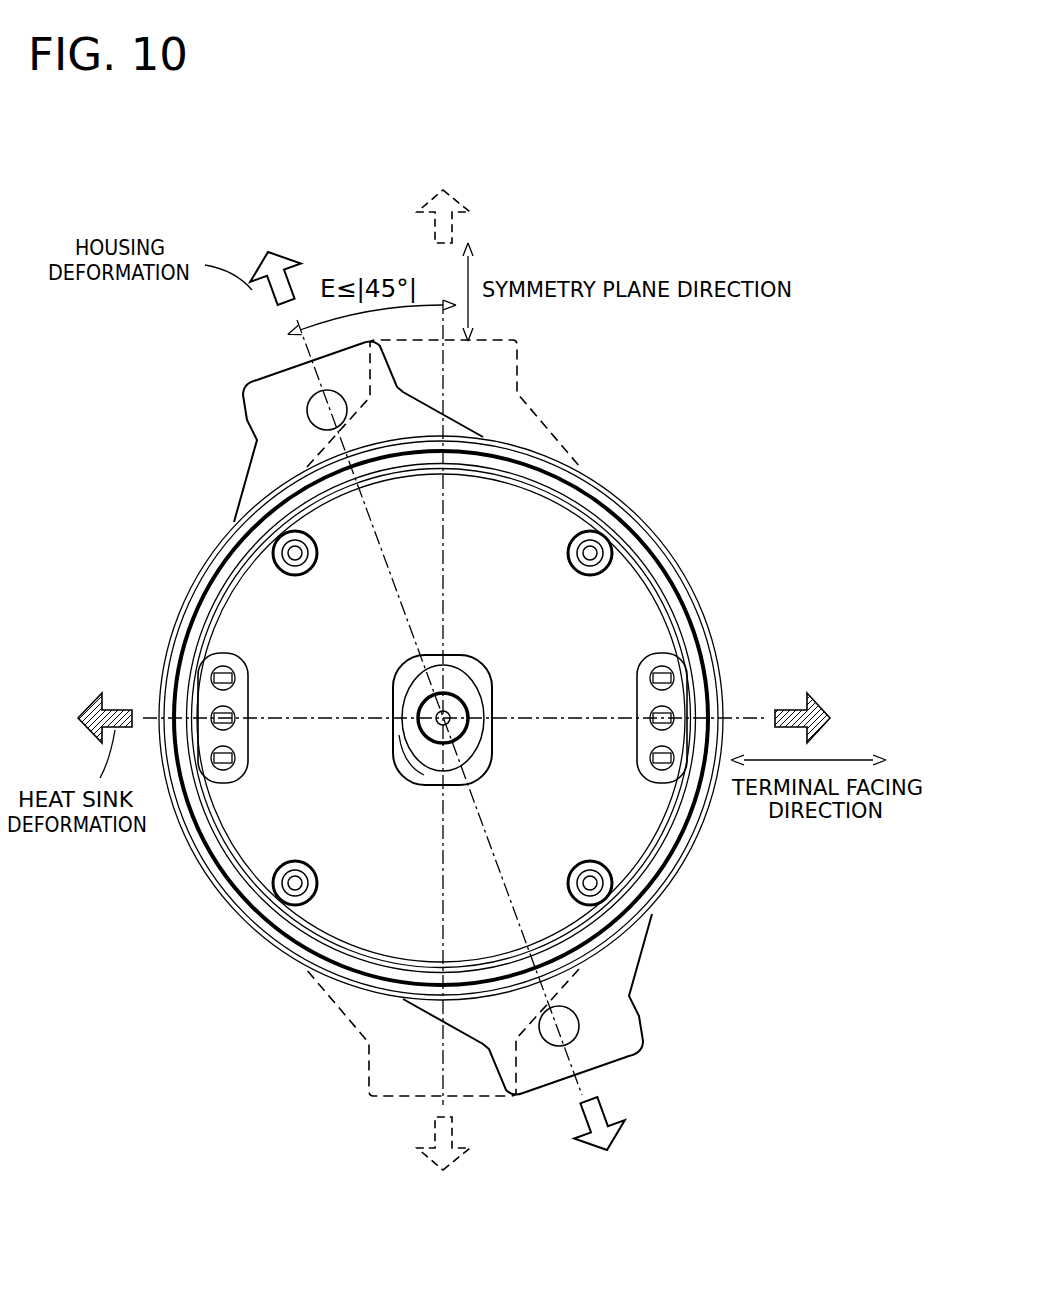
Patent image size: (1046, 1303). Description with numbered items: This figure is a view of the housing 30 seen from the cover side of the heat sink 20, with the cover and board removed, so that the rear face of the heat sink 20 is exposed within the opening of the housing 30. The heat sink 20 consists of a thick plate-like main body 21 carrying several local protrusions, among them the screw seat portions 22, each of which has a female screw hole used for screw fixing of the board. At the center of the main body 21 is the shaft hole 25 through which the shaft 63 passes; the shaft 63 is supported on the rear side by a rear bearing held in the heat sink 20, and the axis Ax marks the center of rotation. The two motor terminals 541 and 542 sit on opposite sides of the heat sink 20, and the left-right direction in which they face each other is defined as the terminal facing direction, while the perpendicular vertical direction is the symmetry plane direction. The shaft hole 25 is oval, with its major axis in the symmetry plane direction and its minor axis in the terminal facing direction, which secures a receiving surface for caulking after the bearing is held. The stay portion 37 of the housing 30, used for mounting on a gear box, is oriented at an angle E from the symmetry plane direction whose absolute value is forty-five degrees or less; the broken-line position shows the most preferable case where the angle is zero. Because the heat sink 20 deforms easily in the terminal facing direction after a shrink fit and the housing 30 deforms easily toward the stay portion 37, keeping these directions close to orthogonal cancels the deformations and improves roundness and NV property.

The heat sink 20 is at (532, 498).
The main body 21 is at (250, 618).
The screw seat portion 22 is at (285, 530).
The shaft hole 25 is at (427, 755).
The housing 30 is at (640, 498).
The stay portion 37 is at (282, 387).
The shaft 63 is at (482, 665).
The motor terminal 541 is at (210, 712).
The motor terminal 542 is at (670, 716).
The axis Ax is at (447, 712).